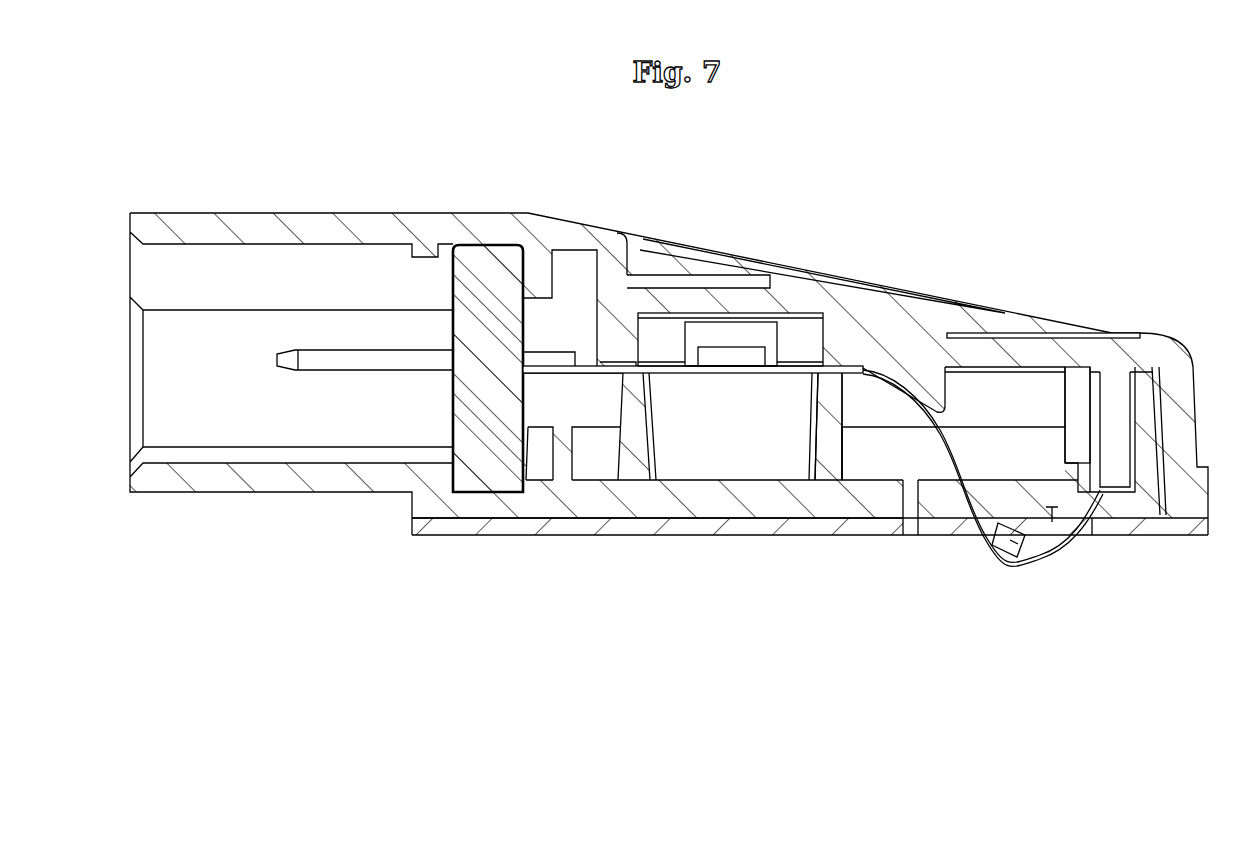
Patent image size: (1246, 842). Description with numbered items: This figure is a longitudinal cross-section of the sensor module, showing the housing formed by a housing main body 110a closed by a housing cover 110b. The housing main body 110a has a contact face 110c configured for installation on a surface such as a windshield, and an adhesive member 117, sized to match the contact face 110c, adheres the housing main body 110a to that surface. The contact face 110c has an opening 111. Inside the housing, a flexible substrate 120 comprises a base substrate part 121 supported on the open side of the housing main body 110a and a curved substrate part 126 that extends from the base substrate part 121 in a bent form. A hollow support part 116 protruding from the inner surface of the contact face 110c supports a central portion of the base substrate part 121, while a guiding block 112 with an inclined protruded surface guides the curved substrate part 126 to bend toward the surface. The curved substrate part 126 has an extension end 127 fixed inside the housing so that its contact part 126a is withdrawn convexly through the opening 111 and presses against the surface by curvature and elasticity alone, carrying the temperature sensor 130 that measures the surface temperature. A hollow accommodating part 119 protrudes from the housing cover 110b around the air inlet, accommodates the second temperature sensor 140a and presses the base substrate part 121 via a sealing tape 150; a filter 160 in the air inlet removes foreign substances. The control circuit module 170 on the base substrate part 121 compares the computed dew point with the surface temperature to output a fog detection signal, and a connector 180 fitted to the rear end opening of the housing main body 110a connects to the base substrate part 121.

The housing main body 110a is at (740, 495).
The housing cover 110b is at (447, 222).
The contact face 110c is at (645, 518).
The opening 111 is at (1052, 522).
The guiding block 112 is at (906, 468).
The hollow support part 116 is at (830, 448).
The adhesive member 117 is at (568, 527).
The hollow accommodating part 119 is at (613, 330).
The flexible substrate 120 is at (883, 195).
The base substrate part 121 is at (831, 392).
The curved substrate part 126 is at (952, 447).
The contact part 126a is at (1000, 557).
The extension end 127 is at (1102, 392).
The temperature sensor 130 is at (1016, 548).
The second temperature sensor 140a is at (740, 357).
The sealing tape 150 is at (623, 362).
The filter 160 is at (715, 312).
The control circuit module 170 is at (772, 336).
The connector 180 is at (462, 447).